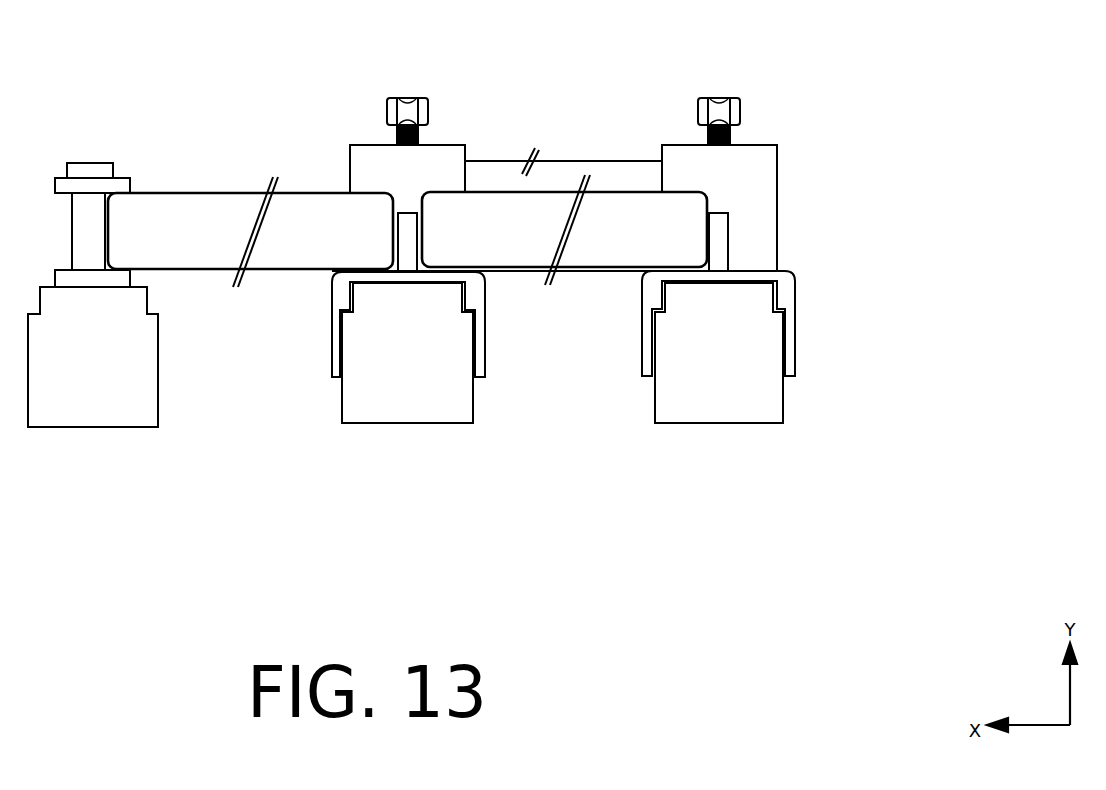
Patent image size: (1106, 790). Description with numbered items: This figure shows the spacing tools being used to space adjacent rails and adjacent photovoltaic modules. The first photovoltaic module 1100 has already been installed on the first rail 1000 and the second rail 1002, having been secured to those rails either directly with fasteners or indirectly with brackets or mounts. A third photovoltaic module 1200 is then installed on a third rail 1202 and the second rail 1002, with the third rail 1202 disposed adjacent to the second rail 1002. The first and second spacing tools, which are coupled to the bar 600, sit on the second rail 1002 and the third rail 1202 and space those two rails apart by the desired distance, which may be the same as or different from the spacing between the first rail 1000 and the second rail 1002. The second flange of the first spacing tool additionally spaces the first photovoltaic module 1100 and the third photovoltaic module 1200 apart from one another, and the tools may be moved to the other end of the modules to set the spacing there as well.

The bar 600 is at (623, 172).
The first photovoltaic module 1100 is at (155, 243).
The third photovoltaic module 1200 is at (465, 243).
The first rail 1000 is at (88, 413).
The second rail 1002 is at (407, 405).
The third rail 1202 is at (715, 405).